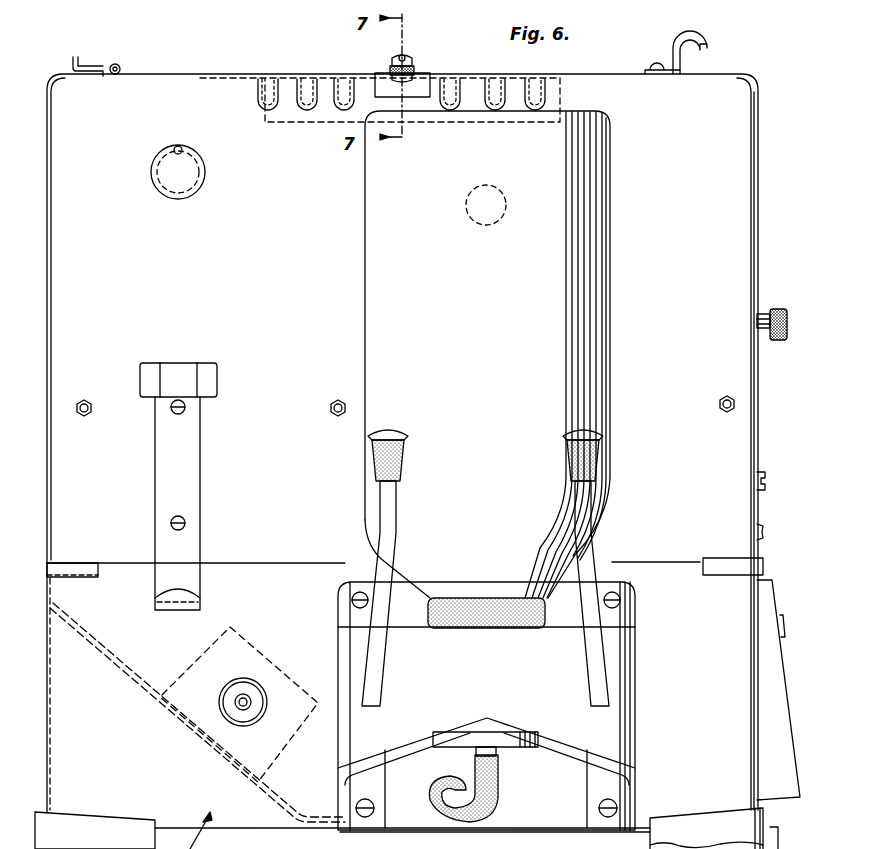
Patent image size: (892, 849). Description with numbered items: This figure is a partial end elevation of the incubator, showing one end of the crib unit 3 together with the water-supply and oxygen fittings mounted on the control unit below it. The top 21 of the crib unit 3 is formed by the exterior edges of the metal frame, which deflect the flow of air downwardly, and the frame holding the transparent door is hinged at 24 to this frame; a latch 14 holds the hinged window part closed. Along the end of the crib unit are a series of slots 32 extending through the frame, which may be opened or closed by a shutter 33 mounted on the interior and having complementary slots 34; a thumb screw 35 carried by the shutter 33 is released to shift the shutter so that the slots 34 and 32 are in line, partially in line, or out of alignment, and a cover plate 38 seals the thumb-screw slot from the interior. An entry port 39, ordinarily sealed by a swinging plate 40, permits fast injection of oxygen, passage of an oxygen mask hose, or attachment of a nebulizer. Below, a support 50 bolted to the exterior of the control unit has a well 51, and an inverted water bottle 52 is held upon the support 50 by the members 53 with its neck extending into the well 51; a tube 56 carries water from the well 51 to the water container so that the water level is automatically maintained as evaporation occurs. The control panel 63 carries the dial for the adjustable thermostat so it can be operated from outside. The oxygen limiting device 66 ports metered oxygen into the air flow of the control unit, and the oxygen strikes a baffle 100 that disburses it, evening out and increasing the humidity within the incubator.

The crib unit 3 is at (762, 95).
The latch 14 is at (777, 308).
The top 21 is at (145, 76).
The hinge 24 is at (116, 64).
The slots 32 is at (271, 80).
The shutter 33 is at (455, 80).
The complementary slots 34 is at (305, 82).
The thumb screw 35 is at (405, 56).
The cover plate 38 is at (425, 74).
The entry port 39 is at (156, 172).
The swinging plate 40 is at (206, 172).
The support 50 is at (633, 675).
The well 51 is at (500, 730).
The water bottle 52 is at (612, 283).
The members 53 is at (382, 552).
The tube 56 is at (500, 787).
The control panel 63 is at (778, 678).
The oxygen limiting device 66 is at (228, 722).
The baffle 100 is at (266, 652).